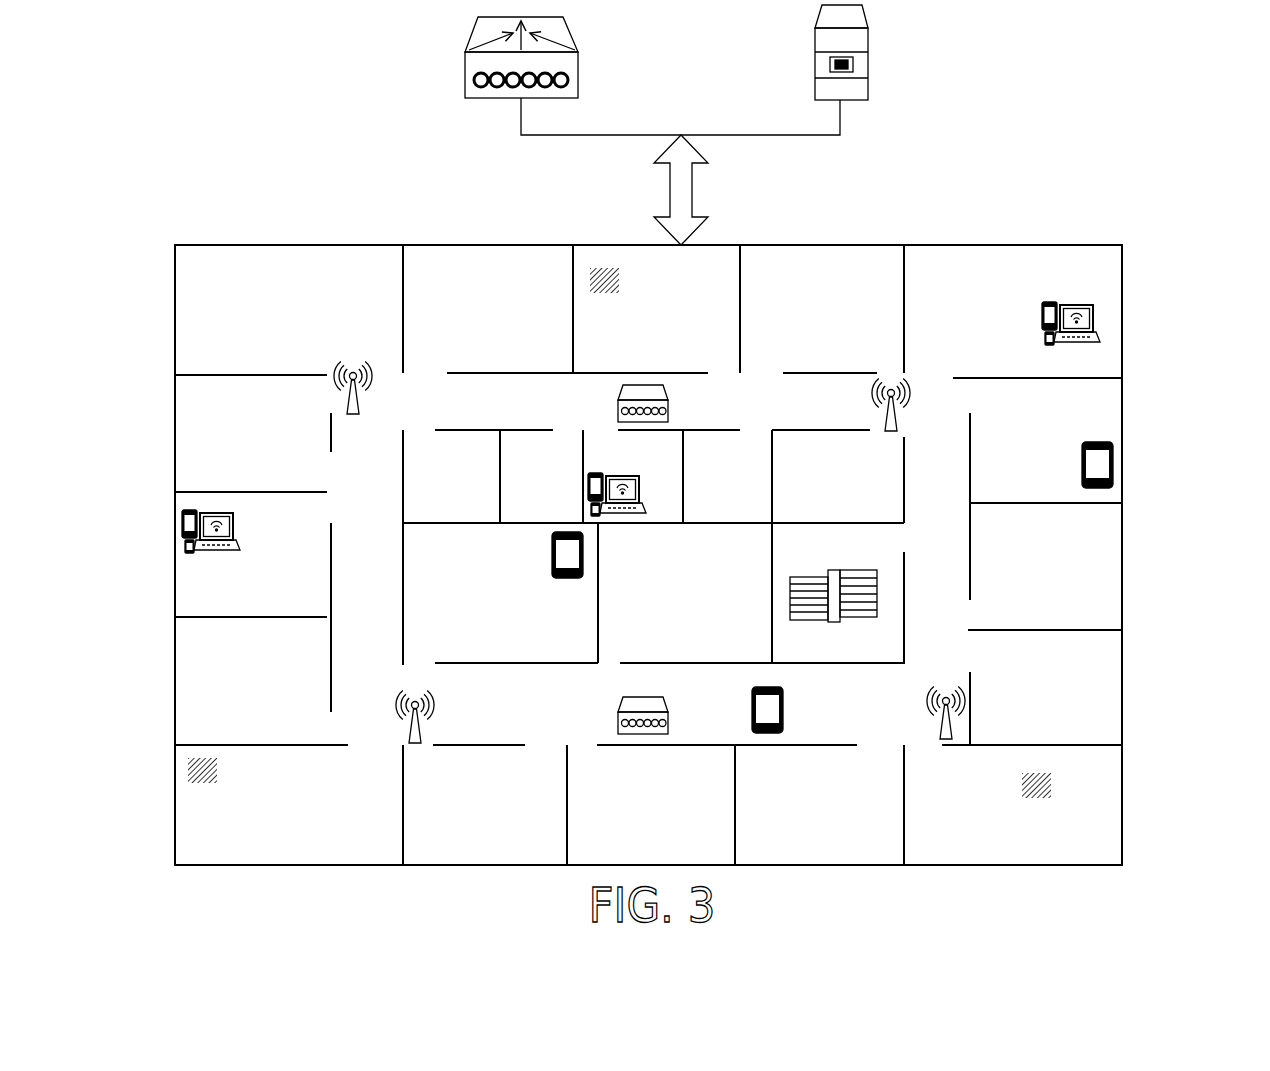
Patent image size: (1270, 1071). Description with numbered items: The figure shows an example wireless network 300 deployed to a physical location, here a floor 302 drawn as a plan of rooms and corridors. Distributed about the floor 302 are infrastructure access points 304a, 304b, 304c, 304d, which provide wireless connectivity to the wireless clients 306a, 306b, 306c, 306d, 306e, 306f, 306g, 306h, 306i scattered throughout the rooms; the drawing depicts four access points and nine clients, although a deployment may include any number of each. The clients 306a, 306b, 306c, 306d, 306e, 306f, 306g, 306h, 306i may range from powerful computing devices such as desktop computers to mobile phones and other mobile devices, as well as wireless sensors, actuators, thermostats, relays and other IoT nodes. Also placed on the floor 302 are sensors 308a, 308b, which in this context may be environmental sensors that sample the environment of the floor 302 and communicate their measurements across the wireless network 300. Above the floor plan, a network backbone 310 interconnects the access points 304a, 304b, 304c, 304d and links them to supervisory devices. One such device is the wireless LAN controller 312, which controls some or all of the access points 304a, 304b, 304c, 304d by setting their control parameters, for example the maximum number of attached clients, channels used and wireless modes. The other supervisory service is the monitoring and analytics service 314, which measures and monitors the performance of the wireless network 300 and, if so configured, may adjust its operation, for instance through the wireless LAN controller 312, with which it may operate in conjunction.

The wireless network 300 is at (1184, 76).
The floor 302 is at (184, 878).
The access point 304a is at (324, 357).
The access point 304b is at (912, 413).
The access point 304c is at (388, 691).
The access point 304d is at (937, 683).
The wireless client 306a is at (790, 712).
The wireless client 306b is at (566, 592).
The wireless client 306c is at (1068, 456).
The wireless client 306d is at (622, 315).
The wireless client 306e is at (216, 802).
The wireless client 306f is at (1030, 812).
The wireless client 306g is at (210, 565).
The wireless client 306h is at (656, 496).
The wireless client 306i is at (1036, 322).
The sensor 308a is at (608, 418).
The sensor 308b is at (608, 714).
The network backbone 310 is at (655, 190).
The wireless LAN controller 312 is at (450, 52).
The monitoring and analytics service 314 is at (862, 118).